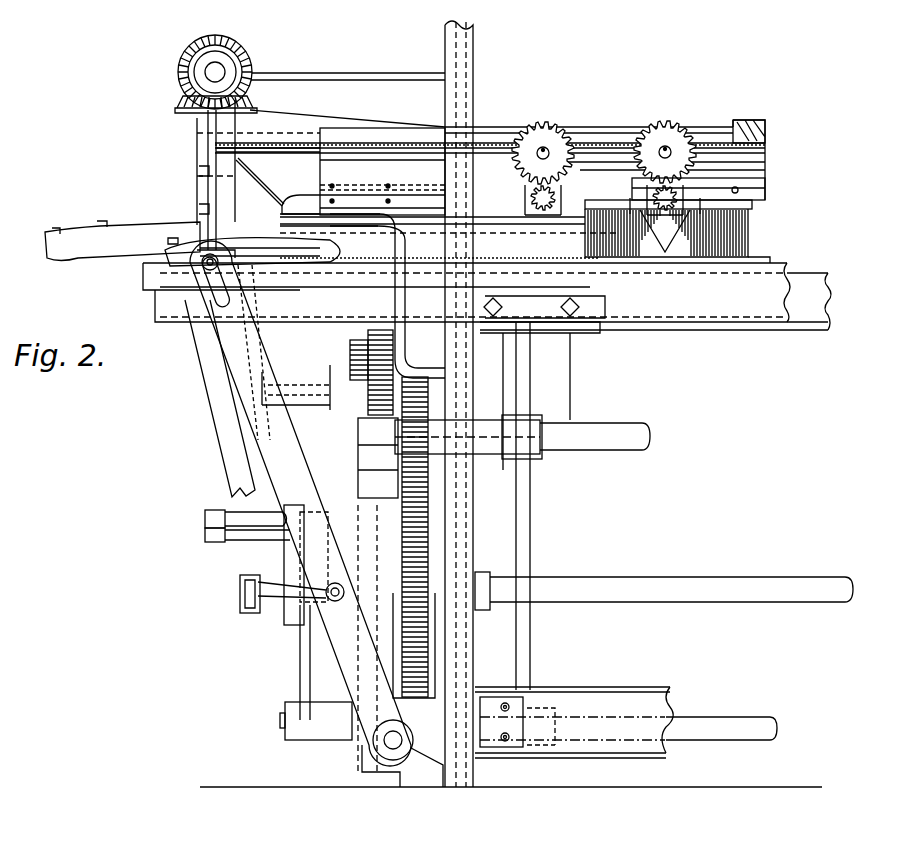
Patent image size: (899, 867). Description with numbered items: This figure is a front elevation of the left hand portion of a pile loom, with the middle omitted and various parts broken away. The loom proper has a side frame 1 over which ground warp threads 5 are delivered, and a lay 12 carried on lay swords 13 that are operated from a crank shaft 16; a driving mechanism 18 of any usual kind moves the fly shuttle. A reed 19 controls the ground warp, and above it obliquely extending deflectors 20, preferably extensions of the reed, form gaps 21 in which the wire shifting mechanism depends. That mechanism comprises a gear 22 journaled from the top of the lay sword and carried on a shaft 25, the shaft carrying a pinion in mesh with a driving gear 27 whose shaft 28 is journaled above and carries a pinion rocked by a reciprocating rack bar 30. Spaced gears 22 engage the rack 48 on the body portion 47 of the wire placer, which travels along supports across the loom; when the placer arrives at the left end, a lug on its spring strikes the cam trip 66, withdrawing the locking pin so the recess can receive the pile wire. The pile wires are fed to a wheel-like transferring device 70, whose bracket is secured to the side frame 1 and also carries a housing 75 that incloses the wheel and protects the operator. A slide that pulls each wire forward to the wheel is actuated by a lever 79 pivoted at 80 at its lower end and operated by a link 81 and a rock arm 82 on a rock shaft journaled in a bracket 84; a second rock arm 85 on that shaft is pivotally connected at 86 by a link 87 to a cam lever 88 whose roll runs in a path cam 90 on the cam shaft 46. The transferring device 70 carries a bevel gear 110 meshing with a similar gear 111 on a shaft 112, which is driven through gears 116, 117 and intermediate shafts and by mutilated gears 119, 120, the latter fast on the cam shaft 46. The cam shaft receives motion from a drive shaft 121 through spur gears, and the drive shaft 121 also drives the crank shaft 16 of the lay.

The side frame 1 is at (462, 515).
The ground warp thread 5 is at (770, 305).
The lay 12 is at (828, 285).
The lay sword 13 is at (530, 505).
The crank shaft 16 is at (500, 420).
The driving mechanism 18 is at (222, 440).
The reed 19 is at (770, 258).
The deflector 20 is at (740, 240).
The gap 21 is at (690, 258).
The gear 22 is at (752, 210).
The shaft 25 is at (700, 182).
The driving gear 27 is at (540, 140).
The shaft 28 is at (549, 150).
The rack bar 30 is at (766, 138).
The cam shaft 46 is at (652, 580).
The body portion 47 is at (590, 255).
The rack 48 is at (428, 280).
The cam trip 66 is at (363, 172).
The transferring device 70 is at (252, 248).
The housing 75 is at (85, 258).
The lever 79 is at (295, 472).
The pivot 80 is at (385, 752).
The link 81 is at (275, 582).
The rock arm 82 is at (258, 612).
The bracket 84 is at (284, 553).
The rock arm 85 is at (210, 540).
The pivot connection 86 is at (205, 514).
The link 87 is at (258, 520).
The cam lever 88 is at (282, 662).
The path cam 90 is at (300, 696).
The bevel gear 110 is at (180, 105).
The bevel gear 111 is at (232, 52).
The shaft 112 is at (213, 72).
The gear 116 is at (195, 290).
The gear 117 is at (270, 400).
The mutilated gear 119 is at (406, 352).
The mutilated gear 120 is at (368, 430).
The drive shaft 121 is at (645, 425).